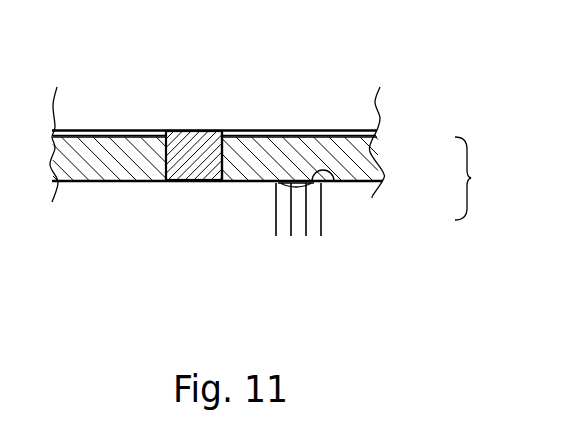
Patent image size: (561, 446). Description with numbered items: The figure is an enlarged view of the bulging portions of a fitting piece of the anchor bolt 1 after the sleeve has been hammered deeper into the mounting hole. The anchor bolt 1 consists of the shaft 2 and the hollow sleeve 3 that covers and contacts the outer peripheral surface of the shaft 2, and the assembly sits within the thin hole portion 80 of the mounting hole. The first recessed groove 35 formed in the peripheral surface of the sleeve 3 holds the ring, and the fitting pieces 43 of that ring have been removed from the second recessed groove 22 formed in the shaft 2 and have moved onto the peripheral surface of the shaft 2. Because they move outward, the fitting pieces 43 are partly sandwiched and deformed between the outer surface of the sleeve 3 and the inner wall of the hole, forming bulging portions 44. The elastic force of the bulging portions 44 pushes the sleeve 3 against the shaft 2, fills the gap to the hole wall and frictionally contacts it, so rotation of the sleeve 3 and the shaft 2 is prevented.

The anchor bolt 1 is at (471, 178).
The shaft 2 is at (373, 197).
The hollow sleeve 3 is at (373, 155).
The second recessed groove 22 is at (330, 170).
The first recessed groove 35 is at (210, 180).
The fitting piece 43 is at (180, 180).
The bulging portion 44 is at (222, 132).
The thin hole portion 80 is at (308, 130).